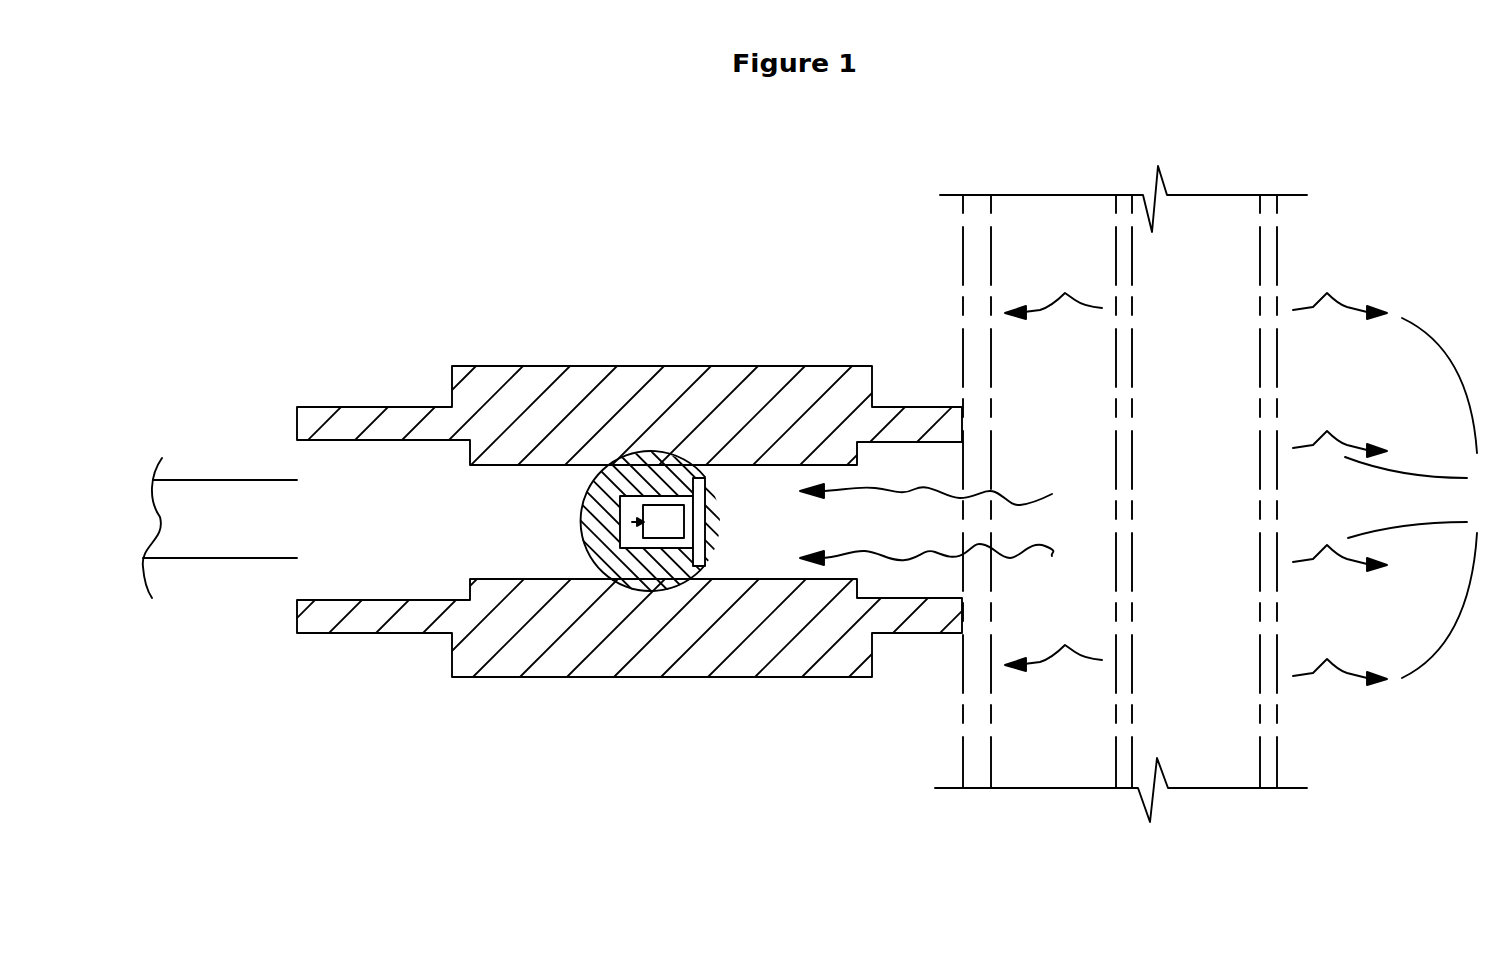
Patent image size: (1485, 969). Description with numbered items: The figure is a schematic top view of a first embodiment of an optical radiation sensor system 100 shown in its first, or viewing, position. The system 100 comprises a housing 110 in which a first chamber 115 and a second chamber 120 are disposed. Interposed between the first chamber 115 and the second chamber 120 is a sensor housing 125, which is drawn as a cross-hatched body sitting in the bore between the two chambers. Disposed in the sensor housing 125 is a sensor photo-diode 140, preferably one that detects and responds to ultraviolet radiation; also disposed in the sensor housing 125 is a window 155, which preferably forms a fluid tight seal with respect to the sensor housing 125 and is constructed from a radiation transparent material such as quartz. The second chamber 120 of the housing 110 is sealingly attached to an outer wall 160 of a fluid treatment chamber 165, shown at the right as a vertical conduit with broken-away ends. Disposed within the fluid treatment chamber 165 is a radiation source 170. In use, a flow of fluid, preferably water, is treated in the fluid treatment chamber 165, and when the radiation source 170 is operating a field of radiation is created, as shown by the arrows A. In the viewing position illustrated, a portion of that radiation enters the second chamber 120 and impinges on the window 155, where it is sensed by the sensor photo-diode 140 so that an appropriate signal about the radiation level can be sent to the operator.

The optical radiation sensor system 100 is at (517, 335).
The housing 110 is at (745, 423).
The first chamber 115 is at (390, 533).
The second chamber 120 is at (857, 537).
The sensor housing 125 is at (592, 551).
The sensor photo-diode 140 is at (660, 527).
The window 155 is at (698, 540).
The outer wall 160 is at (973, 242).
The fluid treatment chamber 165 is at (1213, 172).
The radiation source 170 is at (1208, 518).
The arrows A is at (1411, 498).